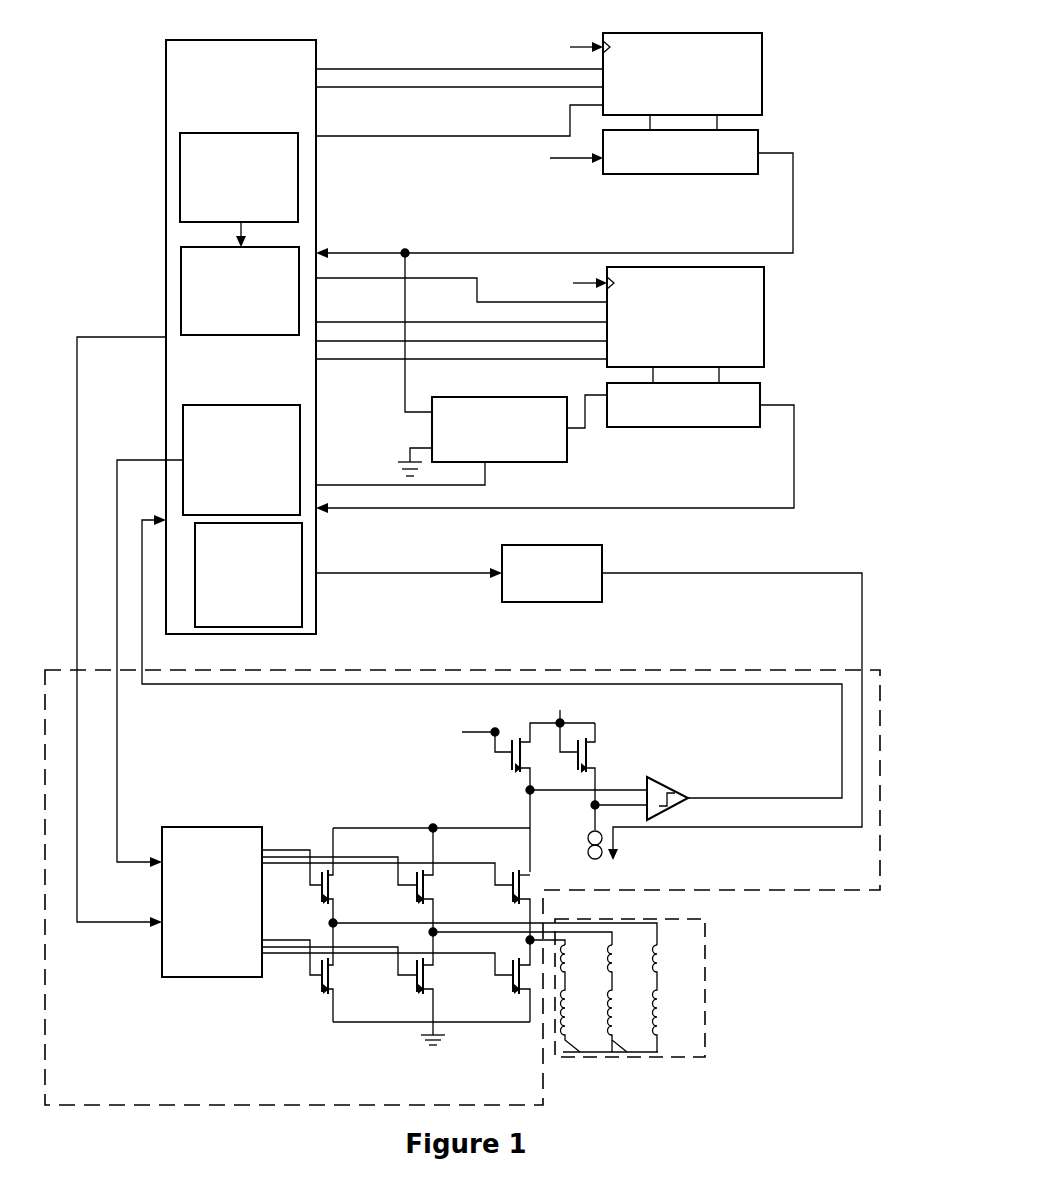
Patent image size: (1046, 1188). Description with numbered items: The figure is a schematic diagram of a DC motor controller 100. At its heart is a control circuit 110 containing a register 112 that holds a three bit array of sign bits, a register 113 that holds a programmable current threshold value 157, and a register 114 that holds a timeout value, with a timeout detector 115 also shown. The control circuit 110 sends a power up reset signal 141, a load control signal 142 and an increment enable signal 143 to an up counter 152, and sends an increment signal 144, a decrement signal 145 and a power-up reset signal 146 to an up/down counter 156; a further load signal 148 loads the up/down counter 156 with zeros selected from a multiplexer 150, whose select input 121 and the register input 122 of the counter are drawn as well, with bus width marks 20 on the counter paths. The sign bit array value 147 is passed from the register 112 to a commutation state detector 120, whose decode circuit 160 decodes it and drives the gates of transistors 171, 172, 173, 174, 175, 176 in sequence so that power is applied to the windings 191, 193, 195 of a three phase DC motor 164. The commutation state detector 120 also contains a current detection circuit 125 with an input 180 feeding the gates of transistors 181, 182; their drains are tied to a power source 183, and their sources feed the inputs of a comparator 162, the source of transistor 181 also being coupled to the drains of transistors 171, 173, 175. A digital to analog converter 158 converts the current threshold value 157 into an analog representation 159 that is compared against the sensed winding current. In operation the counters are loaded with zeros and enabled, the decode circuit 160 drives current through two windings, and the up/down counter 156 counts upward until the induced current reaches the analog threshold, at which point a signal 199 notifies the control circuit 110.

The DC motor controller 100 is at (102, 100).
The control circuit 110 is at (228, 111).
The register 112 is at (190, 502).
The register 113 is at (232, 619).
The register 114 is at (188, 216).
The timeout detector 115 is at (189, 329).
The commutation state detector 120 is at (115, 1089).
The multiplexer select line 121 is at (326, 485).
The up counter register input 122 is at (575, 159).
The current detection circuit 125 is at (654, 732).
The power up reset signal 141 is at (360, 136).
The load control signal 142 is at (352, 69).
The increment enable signal 143 is at (350, 87).
The increment signal 144 is at (332, 322).
The decrement signal 145 is at (515, 341).
The power-up reset signal 146 is at (332, 359).
The sign bit array value 147 is at (156, 449).
The load signal 148 is at (477, 290).
The multiplexer 150 is at (543, 415).
The up counter 152 is at (762, 97).
The up/down counter 156 is at (764, 340).
The current threshold value 157 is at (357, 573).
The digital to analog converter 158 is at (602, 596).
The analog representation 159 is at (768, 827).
The decode circuit 160 is at (196, 967).
The comparator 162 is at (663, 777).
The three phase DC motor 164 is at (705, 950).
The transistor 171 is at (320, 893).
The transistor 172 is at (320, 986).
The transistor 173 is at (422, 893).
The transistor 174 is at (420, 984).
The transistor 175 is at (517, 893).
The transistor 176 is at (517, 984).
The input 180 is at (384, 751).
The transistor 181 is at (512, 762).
The transistor 182 is at (596, 750).
The power source 183 is at (586, 703).
The winding 191 is at (580, 1052).
The winding 193 is at (640, 1052).
The winding 195 is at (668, 1006).
The signal 199 is at (842, 736).
The bus width indicator 20 is at (378, 244).